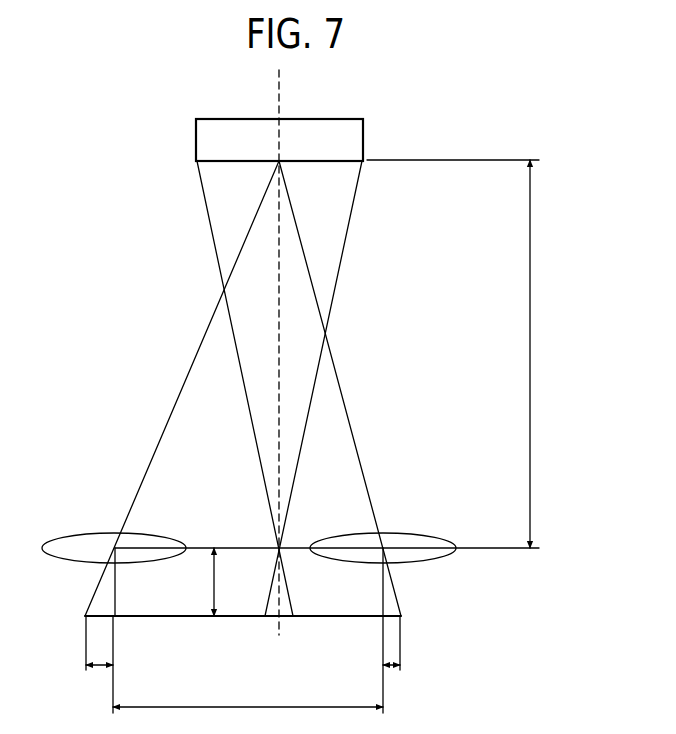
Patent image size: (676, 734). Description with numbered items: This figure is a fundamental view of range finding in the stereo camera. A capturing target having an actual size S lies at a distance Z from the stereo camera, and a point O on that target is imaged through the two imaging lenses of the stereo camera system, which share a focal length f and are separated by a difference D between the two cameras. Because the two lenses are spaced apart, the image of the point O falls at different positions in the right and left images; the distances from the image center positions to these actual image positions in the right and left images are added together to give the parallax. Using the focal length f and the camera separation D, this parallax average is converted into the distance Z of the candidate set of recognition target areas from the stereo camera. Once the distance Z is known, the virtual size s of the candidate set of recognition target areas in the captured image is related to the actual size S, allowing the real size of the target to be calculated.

The actual size of the candidate set of recognition target areas S is at (279, 128).
The point in the capturing target O is at (243, 378).
The virtual size of the candidate set of recognition target areas in the captured im s is at (279, 647).
The focal length f is at (220, 582).
The distance of the candidate set of recognition target areas from the stereo camera Z is at (457, 354).
The difference between the two cameras D is at (248, 695).